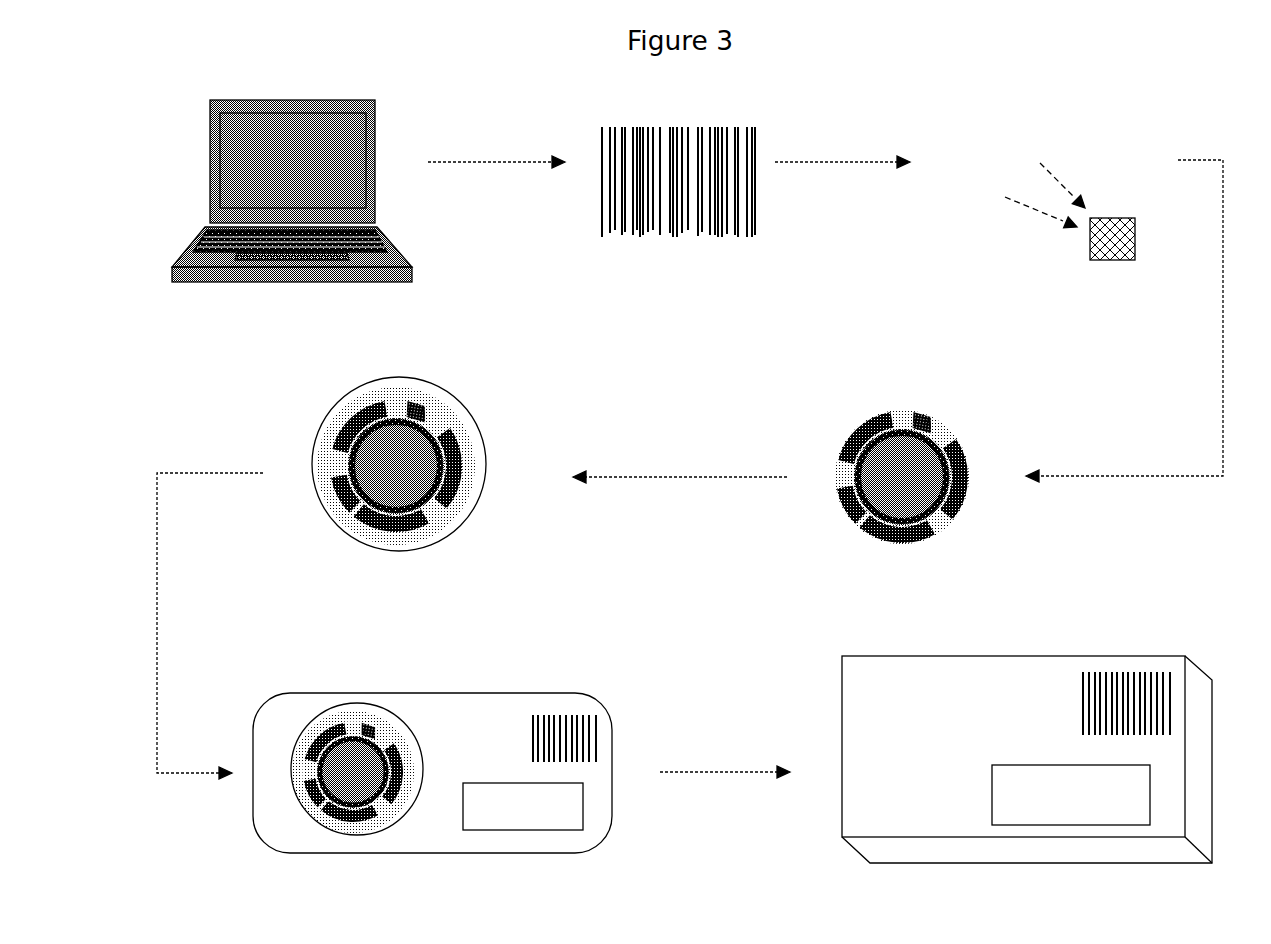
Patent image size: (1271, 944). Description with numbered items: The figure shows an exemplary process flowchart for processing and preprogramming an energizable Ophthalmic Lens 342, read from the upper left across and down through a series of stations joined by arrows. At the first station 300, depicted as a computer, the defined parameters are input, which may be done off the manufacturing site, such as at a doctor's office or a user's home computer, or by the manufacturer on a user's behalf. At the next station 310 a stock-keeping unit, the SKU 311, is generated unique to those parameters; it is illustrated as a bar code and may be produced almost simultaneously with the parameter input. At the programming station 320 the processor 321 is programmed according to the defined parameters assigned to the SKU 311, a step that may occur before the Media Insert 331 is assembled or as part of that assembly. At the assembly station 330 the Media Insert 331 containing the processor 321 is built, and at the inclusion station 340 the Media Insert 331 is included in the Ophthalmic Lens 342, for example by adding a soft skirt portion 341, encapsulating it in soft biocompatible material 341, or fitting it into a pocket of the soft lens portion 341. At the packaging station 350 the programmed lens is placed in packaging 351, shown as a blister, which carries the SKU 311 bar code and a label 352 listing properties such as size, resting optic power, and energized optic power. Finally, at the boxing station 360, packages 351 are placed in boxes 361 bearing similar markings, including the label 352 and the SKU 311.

The parameter input step 300 is at (292, 221).
The SKU generation step 310 is at (868, 429).
The SKU 311 is at (681, 133).
The programming step 320 is at (766, 414).
The processor 321 is at (1117, 218).
The Media Insert assembly step 330 is at (902, 506).
The Media Insert 331 is at (940, 532).
The lens inclusion step 340 is at (396, 498).
The soft lens portion 341 is at (455, 418).
The Ophthalmic Lens 342 is at (478, 503).
The packaging step 350 is at (751, 777).
The packaging 351 is at (482, 705).
The label 352 is at (570, 815).
The boxing step 360 is at (1012, 764).
The box 361 is at (857, 747).